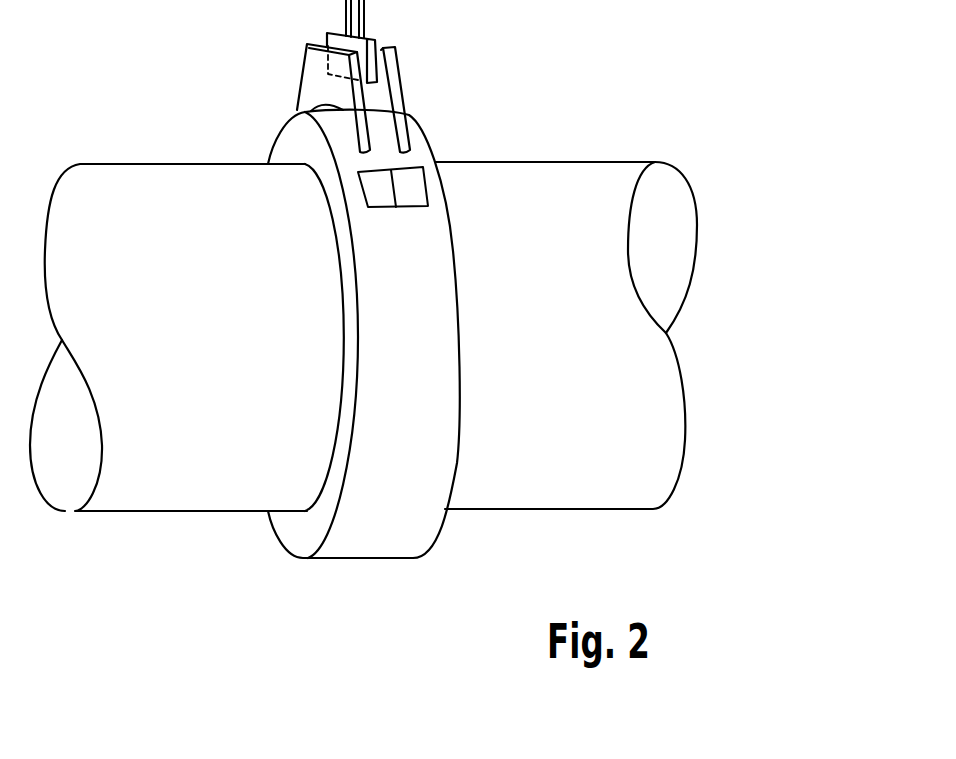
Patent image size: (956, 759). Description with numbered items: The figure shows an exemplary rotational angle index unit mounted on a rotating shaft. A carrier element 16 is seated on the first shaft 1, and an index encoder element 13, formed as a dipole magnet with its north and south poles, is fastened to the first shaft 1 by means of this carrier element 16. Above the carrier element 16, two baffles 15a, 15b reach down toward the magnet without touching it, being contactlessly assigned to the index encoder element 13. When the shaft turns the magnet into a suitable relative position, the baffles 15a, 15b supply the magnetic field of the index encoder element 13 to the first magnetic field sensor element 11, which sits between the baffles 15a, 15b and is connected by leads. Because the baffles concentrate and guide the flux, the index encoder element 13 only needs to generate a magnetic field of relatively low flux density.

The first shaft 1 is at (568, 193).
The first magnetic field sensor element 11 is at (375, 40).
The index encoder element 13 is at (412, 160).
The baffle 15a is at (317, 62).
The baffle 15b is at (397, 85).
The carrier element 16 is at (370, 528).